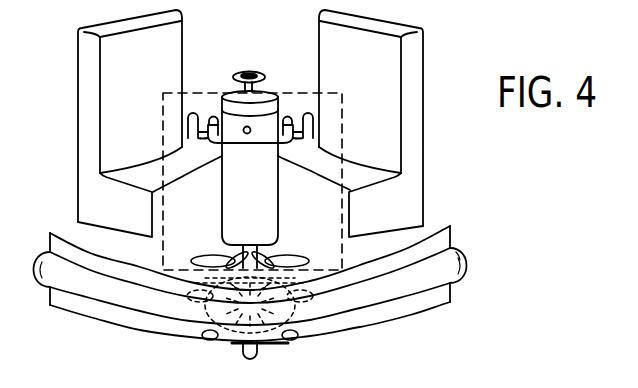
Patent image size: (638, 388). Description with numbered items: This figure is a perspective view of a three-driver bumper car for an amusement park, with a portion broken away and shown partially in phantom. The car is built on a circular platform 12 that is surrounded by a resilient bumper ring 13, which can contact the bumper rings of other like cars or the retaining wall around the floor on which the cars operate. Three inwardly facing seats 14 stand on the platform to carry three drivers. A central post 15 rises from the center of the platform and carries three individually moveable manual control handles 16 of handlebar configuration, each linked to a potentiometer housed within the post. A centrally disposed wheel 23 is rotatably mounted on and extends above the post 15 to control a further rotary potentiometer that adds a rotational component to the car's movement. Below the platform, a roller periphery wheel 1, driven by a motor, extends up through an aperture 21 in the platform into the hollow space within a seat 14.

The roller periphery wheel 1 is at (258, 350).
The circular platform 12 is at (451, 224).
The resilient bumper ring 13 is at (470, 263).
The inwardly facing seat 14 is at (77, 148).
The central post 15 is at (279, 183).
The manual control handle 16 is at (192, 113).
The aperture 21 is at (302, 263).
The centrally disposed wheel 23 is at (266, 77).